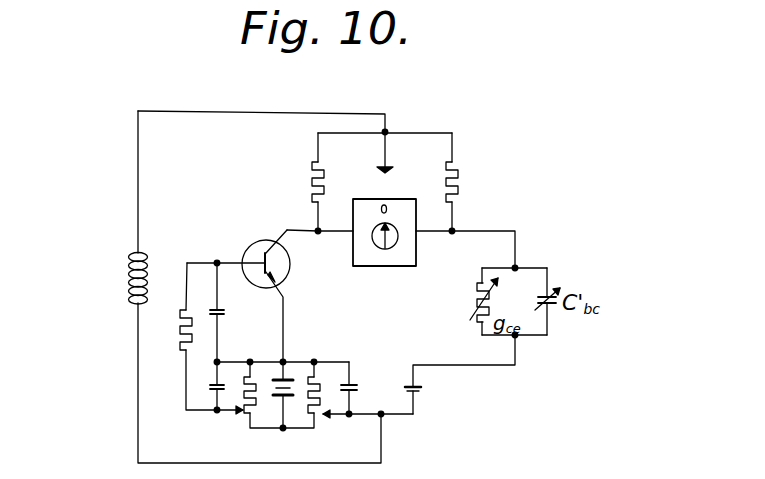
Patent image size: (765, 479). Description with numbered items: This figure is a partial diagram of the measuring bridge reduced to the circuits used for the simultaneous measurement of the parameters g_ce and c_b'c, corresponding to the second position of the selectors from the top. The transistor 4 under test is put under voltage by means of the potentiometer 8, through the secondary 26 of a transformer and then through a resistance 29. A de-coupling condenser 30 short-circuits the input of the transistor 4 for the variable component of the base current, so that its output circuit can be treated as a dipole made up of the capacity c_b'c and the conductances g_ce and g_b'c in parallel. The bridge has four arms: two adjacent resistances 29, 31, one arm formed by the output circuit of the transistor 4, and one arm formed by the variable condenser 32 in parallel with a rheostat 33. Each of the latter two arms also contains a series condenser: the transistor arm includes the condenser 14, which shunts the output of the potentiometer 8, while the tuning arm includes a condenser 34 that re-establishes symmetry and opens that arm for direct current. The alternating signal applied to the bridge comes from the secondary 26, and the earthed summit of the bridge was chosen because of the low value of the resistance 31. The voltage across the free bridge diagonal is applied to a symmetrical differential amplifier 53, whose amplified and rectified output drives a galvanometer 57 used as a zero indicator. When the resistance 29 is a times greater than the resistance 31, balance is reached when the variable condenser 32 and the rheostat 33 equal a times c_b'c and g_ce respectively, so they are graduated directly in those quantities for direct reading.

The transistor 4 is at (252, 248).
The potentiometer 8 is at (309, 413).
The condenser 14 is at (350, 392).
The secondary 26 is at (128, 278).
The resistance 29 is at (310, 190).
The de-coupling condenser 30 is at (226, 311).
The resistance 31 is at (460, 176).
The variable condenser 32 is at (553, 305).
The rheostat 33 is at (500, 301).
The condenser 34 is at (421, 390).
The symmetrical differential amplifier 53 is at (393, 199).
The galvanometer 57 is at (400, 240).